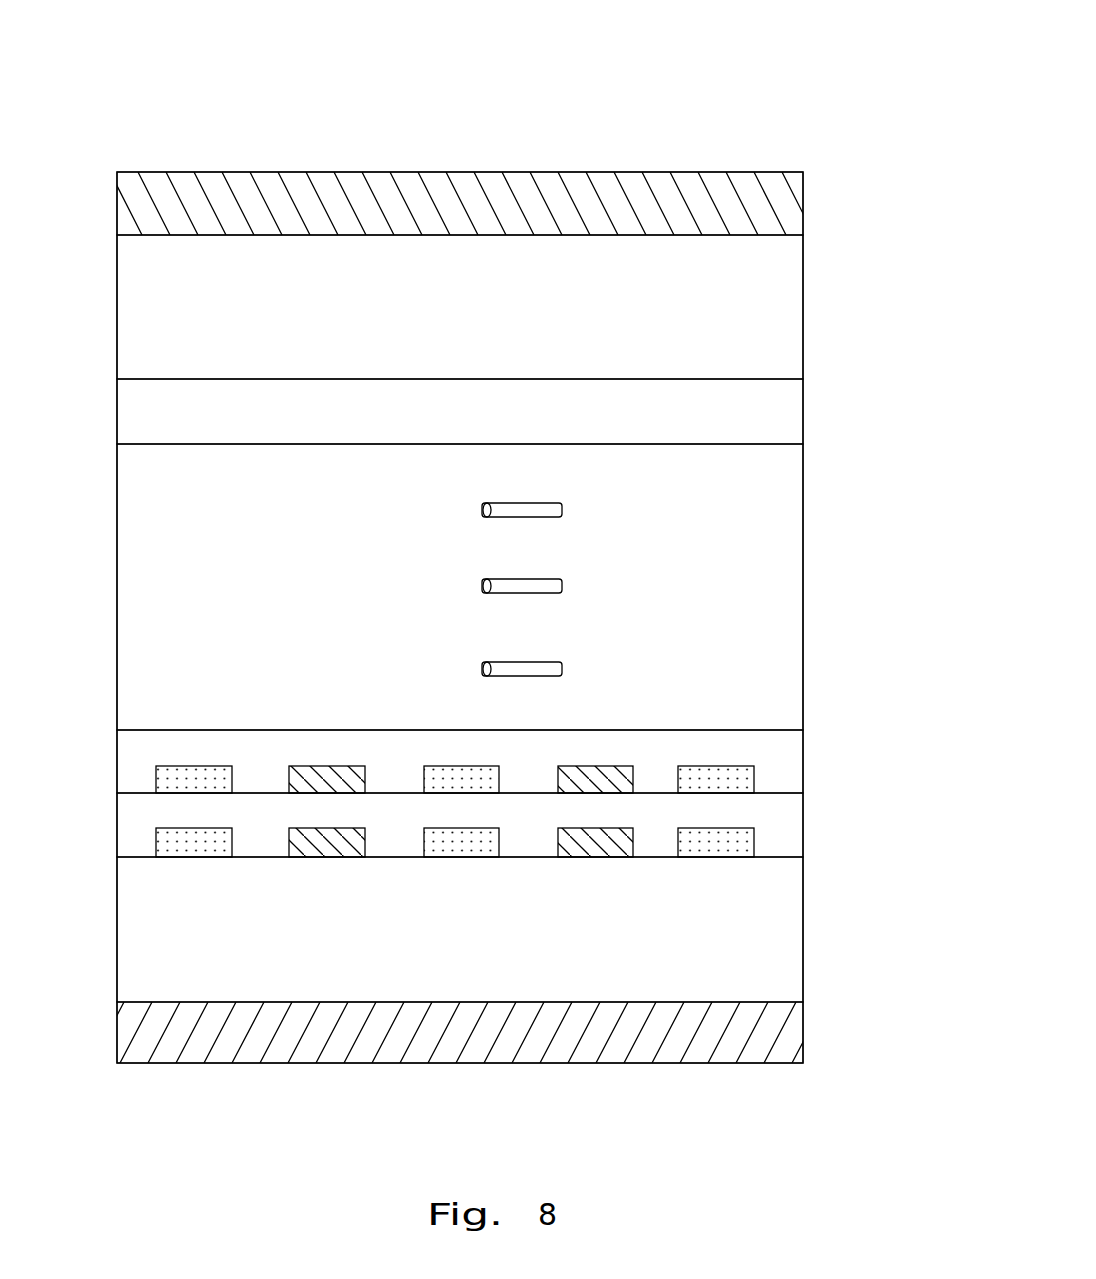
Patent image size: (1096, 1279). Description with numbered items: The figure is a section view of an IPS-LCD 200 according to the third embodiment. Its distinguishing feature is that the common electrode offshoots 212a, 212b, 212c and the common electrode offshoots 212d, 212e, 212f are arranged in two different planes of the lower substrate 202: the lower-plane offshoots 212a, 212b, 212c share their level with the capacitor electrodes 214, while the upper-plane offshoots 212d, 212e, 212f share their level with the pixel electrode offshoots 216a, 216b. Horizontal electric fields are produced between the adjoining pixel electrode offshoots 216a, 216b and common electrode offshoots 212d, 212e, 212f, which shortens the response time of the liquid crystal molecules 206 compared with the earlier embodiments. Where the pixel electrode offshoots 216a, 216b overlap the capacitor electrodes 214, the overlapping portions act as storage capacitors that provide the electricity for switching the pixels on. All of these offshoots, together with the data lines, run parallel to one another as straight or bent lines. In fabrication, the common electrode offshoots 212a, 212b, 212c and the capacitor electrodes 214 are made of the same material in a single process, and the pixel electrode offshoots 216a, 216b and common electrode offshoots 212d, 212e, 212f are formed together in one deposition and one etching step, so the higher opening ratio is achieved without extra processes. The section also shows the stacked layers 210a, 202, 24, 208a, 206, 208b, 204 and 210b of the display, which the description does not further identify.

The IPS-LCD 200 is at (652, 85).
The upper polarizer / protective layer 210b is at (775, 220).
The upper substrate 204 is at (777, 325).
The upper electrode layer 208b is at (768, 415).
The liquid crystal molecules 206 is at (563, 510).
The pixel electrode offshoot 216b is at (598, 780).
The common electrode offshoot 212f is at (719, 776).
The lower electrode layer 208a is at (777, 770).
The insulating layer 24 is at (777, 838).
The lower substrate 202 is at (777, 945).
The lower polarizer / protective layer 210a is at (777, 1048).
The common electrode offshoot 212d is at (175, 783).
The common electrode offshoot 212e is at (485, 778).
The pixel electrode offshoot 216a is at (297, 778).
The common electrode offshoot 212a is at (189, 845).
The common electrode offshoot 212b is at (458, 848).
The common electrode offshoot 212c is at (720, 848).
The capacitor electrode 214 is at (342, 848).